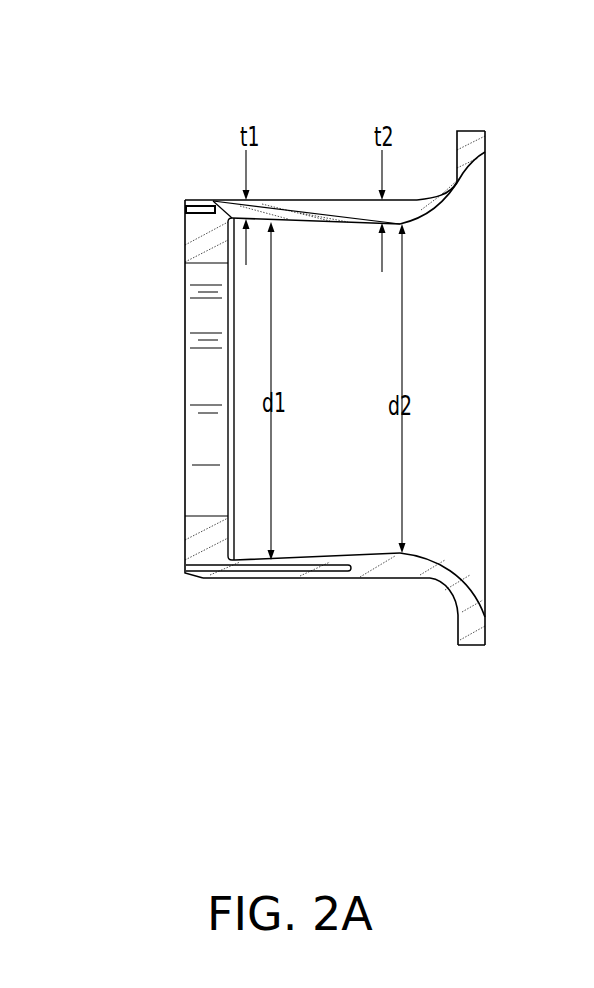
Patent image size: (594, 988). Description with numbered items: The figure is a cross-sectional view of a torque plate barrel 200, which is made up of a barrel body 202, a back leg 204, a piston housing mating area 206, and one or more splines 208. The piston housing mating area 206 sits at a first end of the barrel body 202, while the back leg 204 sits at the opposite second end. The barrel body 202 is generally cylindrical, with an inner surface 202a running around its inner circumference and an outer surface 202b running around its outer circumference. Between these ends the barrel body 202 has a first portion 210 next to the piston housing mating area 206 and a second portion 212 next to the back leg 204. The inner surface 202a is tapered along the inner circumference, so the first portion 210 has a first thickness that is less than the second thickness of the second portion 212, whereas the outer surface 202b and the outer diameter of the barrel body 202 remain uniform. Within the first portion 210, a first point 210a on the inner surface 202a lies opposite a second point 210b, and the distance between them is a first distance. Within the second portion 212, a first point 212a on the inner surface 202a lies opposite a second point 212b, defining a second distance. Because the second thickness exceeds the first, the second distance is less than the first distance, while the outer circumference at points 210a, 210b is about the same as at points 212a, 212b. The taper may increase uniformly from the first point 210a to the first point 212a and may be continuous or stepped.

The torque plate barrel 200 is at (93, 100).
The barrel body 202 is at (293, 586).
The inner surface 202a is at (330, 260).
The outer surface 202b is at (368, 580).
The back leg 204 is at (472, 165).
The piston housing mating area 206 is at (210, 200).
The splines 208 is at (318, 200).
The first portion 210 is at (233, 140).
The first point 210a is at (273, 222).
The second point 210b is at (268, 567).
The second portion 212 is at (413, 150).
The first point 212a is at (403, 228).
The second point 212b is at (403, 558).